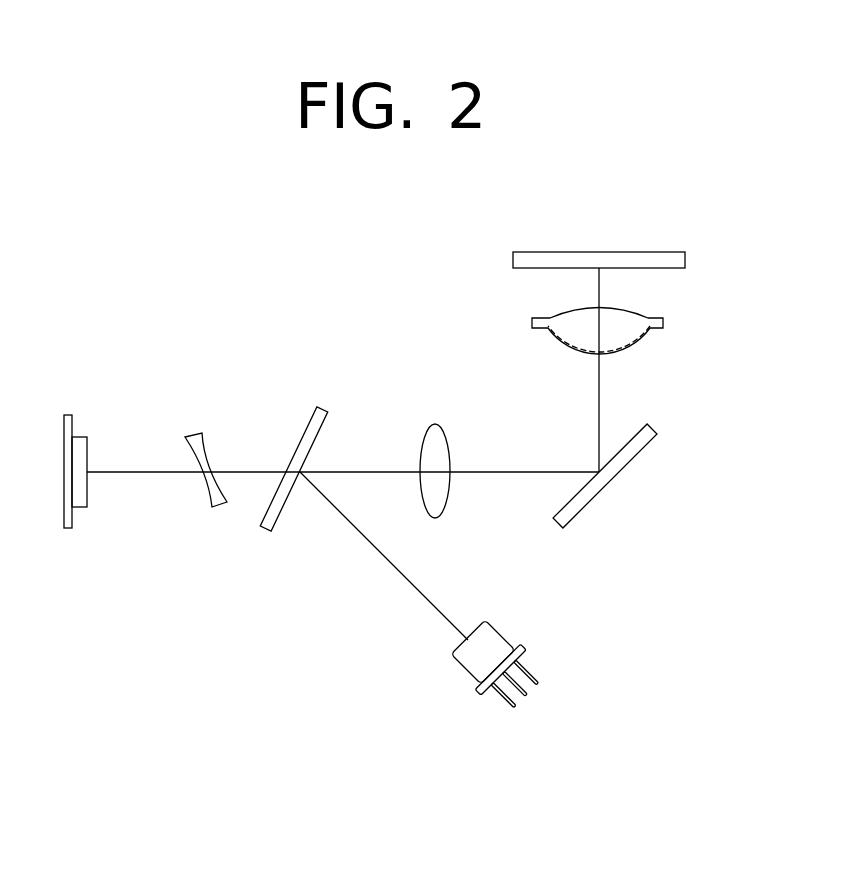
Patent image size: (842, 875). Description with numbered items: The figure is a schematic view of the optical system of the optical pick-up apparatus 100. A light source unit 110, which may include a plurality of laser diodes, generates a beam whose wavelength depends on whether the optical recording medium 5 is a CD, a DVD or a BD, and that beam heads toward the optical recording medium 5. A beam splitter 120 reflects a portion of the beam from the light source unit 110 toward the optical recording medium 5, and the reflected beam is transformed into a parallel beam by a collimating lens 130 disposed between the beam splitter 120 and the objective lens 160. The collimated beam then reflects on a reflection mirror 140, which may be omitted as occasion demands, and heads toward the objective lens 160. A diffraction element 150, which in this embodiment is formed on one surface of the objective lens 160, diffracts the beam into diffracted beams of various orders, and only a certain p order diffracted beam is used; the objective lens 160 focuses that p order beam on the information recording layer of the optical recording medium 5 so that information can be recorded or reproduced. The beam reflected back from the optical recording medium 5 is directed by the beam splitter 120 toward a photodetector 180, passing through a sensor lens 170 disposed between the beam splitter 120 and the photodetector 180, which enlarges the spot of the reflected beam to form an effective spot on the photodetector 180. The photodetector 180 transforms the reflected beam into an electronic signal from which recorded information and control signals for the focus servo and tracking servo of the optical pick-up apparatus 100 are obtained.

The optical recording medium 5 is at (685, 256).
The optical pick-up apparatus 100 is at (293, 248).
The light source unit 110 is at (427, 652).
The beam splitter 120 is at (322, 405).
The collimating lens 130 is at (435, 423).
The reflection mirror 140 is at (657, 428).
The diffraction element 150 is at (645, 362).
The objective lens 160 is at (673, 307).
The sensor lens 170 is at (190, 432).
The photodetector 180 is at (82, 437).